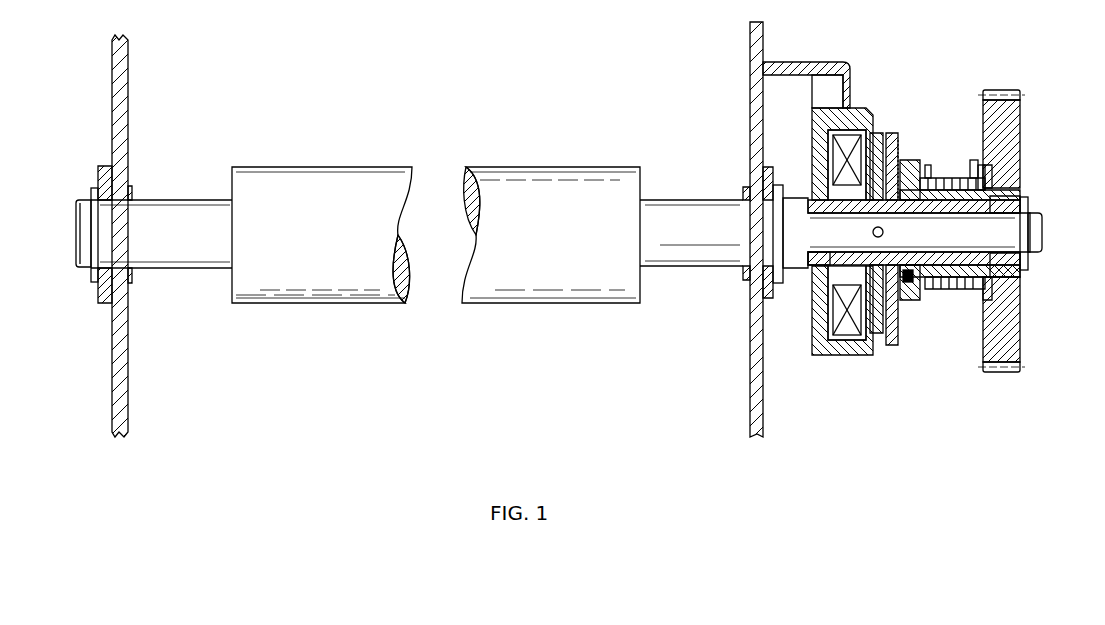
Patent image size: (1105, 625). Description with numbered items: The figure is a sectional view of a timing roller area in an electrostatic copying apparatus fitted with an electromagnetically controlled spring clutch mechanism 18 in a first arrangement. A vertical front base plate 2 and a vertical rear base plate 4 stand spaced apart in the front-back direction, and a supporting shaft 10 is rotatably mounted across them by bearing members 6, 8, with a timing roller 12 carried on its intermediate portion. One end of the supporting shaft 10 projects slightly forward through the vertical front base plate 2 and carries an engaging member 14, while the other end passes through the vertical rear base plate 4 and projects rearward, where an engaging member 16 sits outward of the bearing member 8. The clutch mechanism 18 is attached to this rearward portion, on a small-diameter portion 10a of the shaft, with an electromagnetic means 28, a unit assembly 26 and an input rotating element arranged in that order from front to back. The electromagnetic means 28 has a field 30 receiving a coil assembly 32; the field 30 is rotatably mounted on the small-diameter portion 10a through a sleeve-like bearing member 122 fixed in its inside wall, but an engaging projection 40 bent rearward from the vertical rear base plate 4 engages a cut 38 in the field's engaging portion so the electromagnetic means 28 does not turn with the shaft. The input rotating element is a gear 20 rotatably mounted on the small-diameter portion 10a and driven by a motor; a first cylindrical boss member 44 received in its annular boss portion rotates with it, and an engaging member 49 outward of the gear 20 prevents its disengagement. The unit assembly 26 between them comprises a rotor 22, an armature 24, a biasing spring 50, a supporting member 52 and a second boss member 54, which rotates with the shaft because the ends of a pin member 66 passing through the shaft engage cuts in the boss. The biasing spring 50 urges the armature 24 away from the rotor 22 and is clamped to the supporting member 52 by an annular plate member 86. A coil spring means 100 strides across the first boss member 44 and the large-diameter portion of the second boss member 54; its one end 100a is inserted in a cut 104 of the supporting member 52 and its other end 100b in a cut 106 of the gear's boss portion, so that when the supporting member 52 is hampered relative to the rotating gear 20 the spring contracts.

The vertical front base plate 2 is at (128, 77).
The vertical rear base plate 4 is at (750, 363).
The bearing member 6 is at (132, 280).
The bearing member 8 is at (743, 275).
The supporting shaft 10 is at (682, 265).
The small-diameter portion 10a is at (1005, 232).
The timing roller 12 is at (338, 303).
The engaging member 14 is at (85, 270).
The engaging member 16 is at (743, 190).
The electromagnetically controlled spring clutch mechanism 18 is at (935, 385).
The gear 20 is at (1020, 125).
The rotor 22 is at (878, 133).
The armature 24 is at (893, 133).
The unit assembly 26 is at (897, 345).
The electromagnetic means 28 is at (825, 365).
The field 30 is at (853, 355).
The coil assembly 32 is at (812, 120).
The cut 38 is at (840, 92).
The engaging projection 40 is at (822, 62).
The first cylindrical boss member 44 is at (995, 270).
The engaging member 49 is at (1028, 262).
The biasing spring 50 is at (905, 160).
The supporting member 52 is at (910, 300).
The second boss member 54 is at (950, 178).
The pin member 66 is at (873, 228).
The annular plate member 86 is at (908, 282).
The coil spring means 100 is at (960, 289).
The one end of coil spring means 100a is at (974, 160).
The other end of coil spring means 100b is at (992, 180).
The cut 104 is at (931, 165).
The cut 106 is at (981, 165).
The sleeve-like bearing member 122 is at (828, 265).